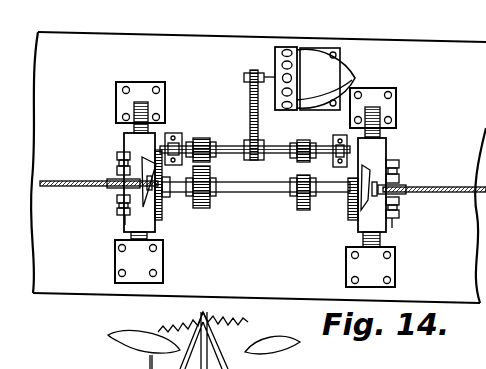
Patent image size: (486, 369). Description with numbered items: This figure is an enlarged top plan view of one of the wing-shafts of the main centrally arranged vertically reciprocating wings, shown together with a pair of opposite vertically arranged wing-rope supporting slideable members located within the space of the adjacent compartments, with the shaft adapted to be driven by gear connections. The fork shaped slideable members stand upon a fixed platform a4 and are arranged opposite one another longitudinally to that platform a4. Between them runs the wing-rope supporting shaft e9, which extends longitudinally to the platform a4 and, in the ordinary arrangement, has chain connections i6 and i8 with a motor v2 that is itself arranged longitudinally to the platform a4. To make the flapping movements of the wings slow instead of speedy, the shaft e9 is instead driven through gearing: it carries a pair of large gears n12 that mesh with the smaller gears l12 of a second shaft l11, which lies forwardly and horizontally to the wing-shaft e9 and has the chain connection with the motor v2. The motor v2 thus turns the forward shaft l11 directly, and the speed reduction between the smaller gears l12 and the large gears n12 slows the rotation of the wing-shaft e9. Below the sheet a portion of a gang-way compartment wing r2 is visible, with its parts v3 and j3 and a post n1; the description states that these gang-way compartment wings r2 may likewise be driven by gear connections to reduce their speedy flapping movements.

The shaft l11 is at (280, 146).
The smaller gear l12 is at (200, 133).
The large gear n12 is at (203, 209).
The shaft e9 is at (256, 195).
The chain i6 is at (250, 110).
The sprocket i8 is at (250, 140).
The motor v2 is at (290, 46).
The fixed platform a4 is at (354, 50).
The gang-way compartment wing r2 is at (144, 330).
The blade v3 is at (272, 334).
The serrated edge j3 is at (209, 317).
The post n1 is at (150, 360).